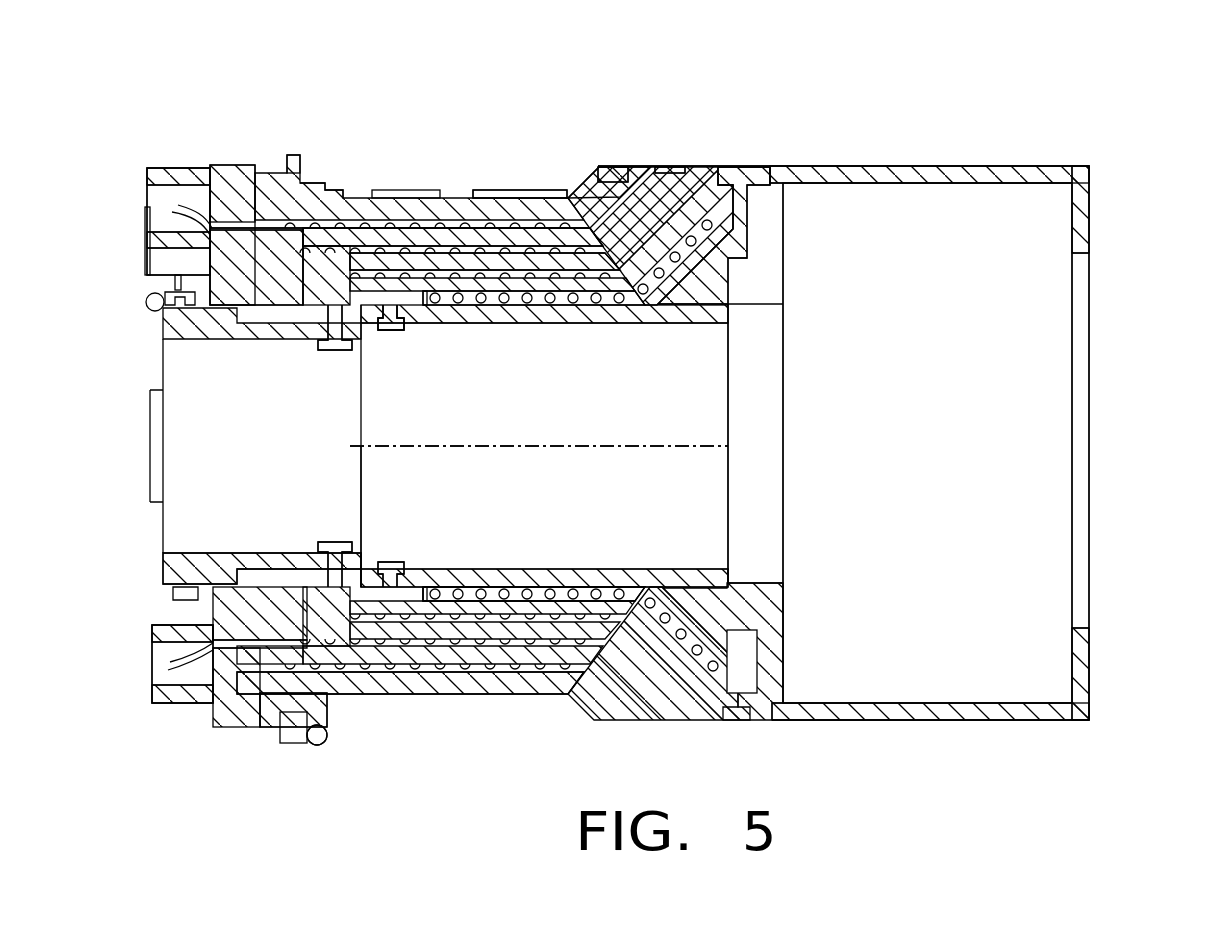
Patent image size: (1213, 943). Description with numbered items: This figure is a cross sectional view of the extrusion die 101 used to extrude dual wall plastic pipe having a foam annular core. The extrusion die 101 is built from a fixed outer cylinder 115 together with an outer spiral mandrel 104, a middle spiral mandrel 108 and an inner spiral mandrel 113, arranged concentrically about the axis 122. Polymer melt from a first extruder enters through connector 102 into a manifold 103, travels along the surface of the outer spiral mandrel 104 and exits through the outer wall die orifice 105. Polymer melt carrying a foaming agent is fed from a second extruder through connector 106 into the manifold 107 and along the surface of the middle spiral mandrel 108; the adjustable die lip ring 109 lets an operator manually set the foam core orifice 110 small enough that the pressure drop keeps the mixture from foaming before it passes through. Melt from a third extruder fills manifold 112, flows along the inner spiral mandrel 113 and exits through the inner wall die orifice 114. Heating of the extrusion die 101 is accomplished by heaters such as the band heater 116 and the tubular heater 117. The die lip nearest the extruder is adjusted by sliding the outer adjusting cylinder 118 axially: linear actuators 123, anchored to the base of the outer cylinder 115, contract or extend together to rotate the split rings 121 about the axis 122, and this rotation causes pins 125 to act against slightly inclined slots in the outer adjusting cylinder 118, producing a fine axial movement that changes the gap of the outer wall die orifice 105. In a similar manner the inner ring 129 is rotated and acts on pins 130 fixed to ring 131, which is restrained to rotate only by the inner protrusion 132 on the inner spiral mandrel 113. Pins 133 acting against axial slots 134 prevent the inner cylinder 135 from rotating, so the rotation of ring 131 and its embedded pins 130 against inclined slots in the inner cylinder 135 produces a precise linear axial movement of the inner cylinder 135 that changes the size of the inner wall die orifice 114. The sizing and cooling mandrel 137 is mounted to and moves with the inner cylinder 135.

The extrusion die 101 is at (1124, 138).
The connector 102 is at (198, 172).
The manifold 103 is at (240, 223).
The outer spiral mandrel 104 is at (390, 237).
The outer wall die orifice 105 is at (647, 165).
The connector 106 is at (180, 703).
The manifold 107 is at (287, 247).
The middle spiral mandrel 108 is at (408, 255).
The adjustable die lip ring 109 is at (688, 167).
The foam core orifice 110 is at (720, 166).
The manifold 112 is at (305, 290).
The inner spiral mandrel 113 is at (539, 412).
The inner wall die orifice 114 is at (773, 167).
The fixed outer cylinder 115 is at (480, 212).
The band heater 116 is at (510, 697).
The tubular heater 117 is at (544, 364).
The outer adjusting cylinder 118 is at (618, 165).
The split rings 121 is at (325, 185).
The axis 122 is at (700, 437).
The linear actuators 123 is at (325, 744).
The pins 125 is at (293, 158).
The inner ring 129 is at (217, 578).
The pins 130 is at (335, 547).
The ring 131 is at (360, 557).
The inner protrusion 132 is at (378, 340).
The pins 133 is at (398, 562).
The axial slots 134 is at (430, 568).
The inner cylinder 135 is at (617, 572).
The sizing and cooling mandrel 137 is at (913, 168).